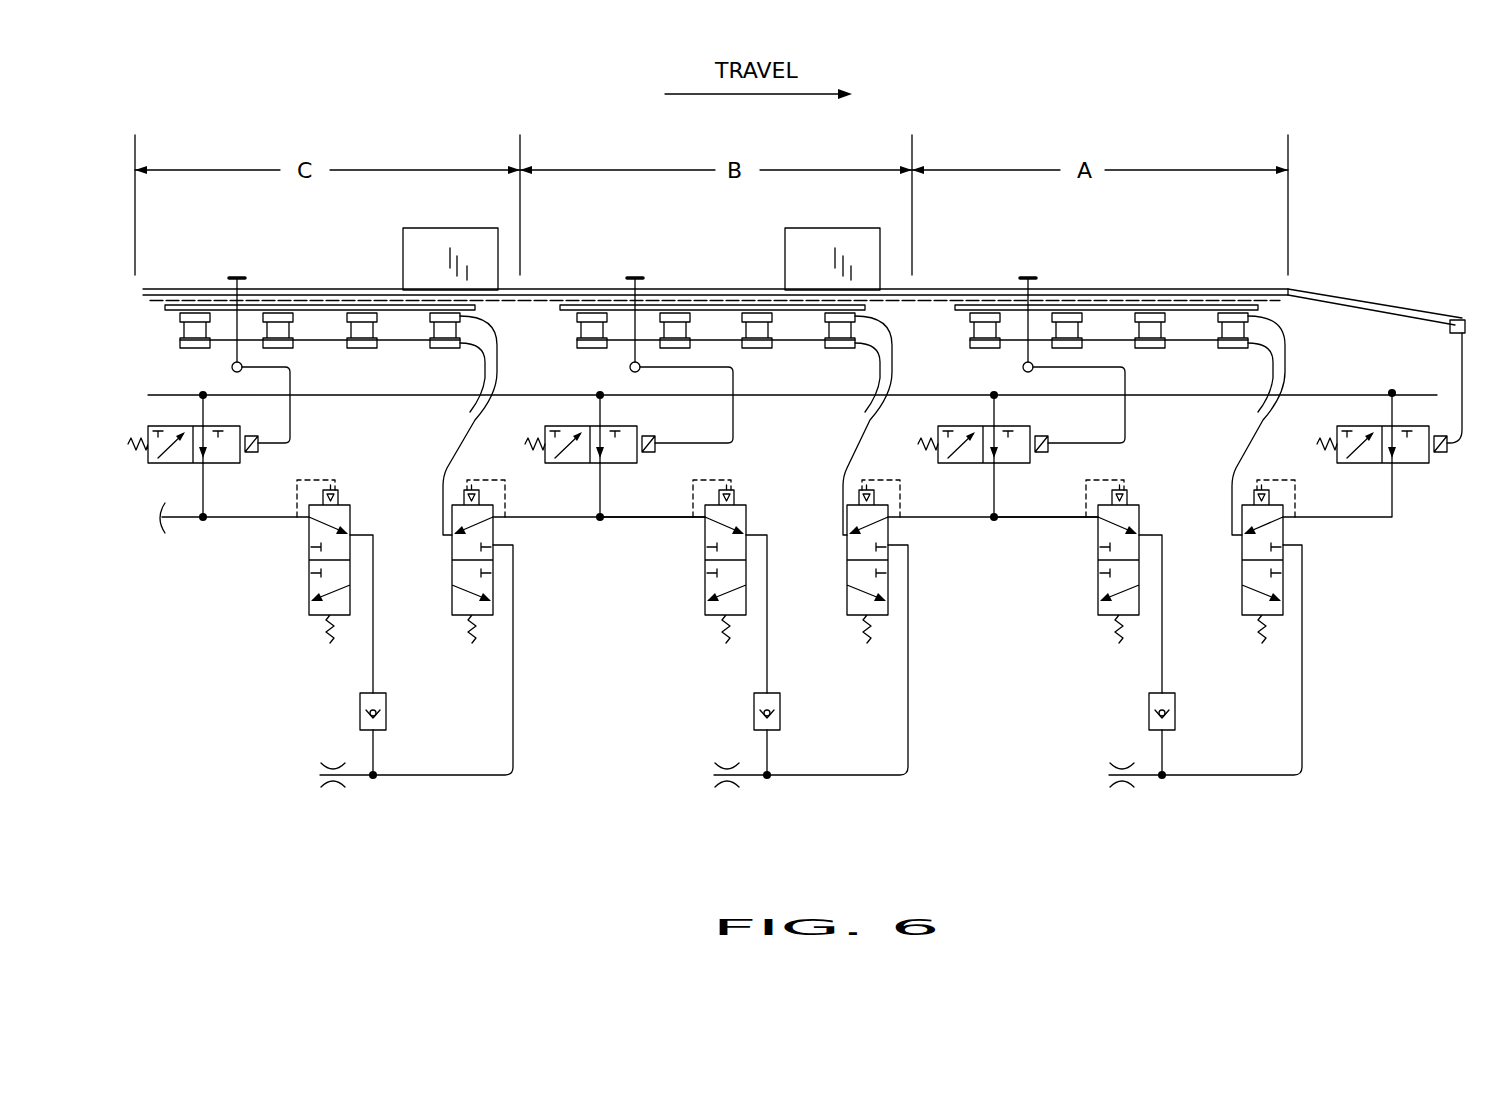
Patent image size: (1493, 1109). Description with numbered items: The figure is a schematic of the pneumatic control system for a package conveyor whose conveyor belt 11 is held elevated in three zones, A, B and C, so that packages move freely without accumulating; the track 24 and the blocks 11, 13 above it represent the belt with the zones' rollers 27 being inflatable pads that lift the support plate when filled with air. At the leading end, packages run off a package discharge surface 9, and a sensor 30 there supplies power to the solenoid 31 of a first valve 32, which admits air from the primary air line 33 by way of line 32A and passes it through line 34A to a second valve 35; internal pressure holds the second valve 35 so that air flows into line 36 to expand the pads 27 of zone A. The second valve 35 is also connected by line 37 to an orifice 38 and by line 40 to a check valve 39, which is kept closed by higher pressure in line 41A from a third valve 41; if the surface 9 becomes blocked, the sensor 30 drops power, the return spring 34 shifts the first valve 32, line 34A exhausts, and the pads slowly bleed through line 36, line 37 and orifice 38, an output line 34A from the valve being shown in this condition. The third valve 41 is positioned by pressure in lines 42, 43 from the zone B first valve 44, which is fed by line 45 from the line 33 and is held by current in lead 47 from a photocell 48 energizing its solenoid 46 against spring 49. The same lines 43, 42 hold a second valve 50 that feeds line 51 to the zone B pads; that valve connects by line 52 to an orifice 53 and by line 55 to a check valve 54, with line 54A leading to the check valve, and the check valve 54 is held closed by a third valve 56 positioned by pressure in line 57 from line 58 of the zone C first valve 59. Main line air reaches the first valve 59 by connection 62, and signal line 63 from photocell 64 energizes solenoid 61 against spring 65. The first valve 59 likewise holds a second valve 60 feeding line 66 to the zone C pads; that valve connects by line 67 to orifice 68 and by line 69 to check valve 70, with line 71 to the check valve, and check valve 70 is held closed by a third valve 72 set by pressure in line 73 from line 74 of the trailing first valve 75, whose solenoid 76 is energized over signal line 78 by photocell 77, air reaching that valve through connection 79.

The package discharge surface 9 is at (1375, 300).
The conveyor belt 11 is at (683, 290).
The cam block 13 is at (942, 290).
The track rail 24 is at (910, 300).
The pads 27 is at (1193, 397).
The sensor 30 is at (1425, 318).
The solenoid 31 is at (1442, 455).
The first valve 32 is at (1405, 470).
The supply line 32A is at (1395, 404).
The primary air line 33 is at (407, 397).
The return spring 34 is at (1312, 447).
The line 34A is at (1392, 522).
The second valve 35 is at (1285, 537).
The line 36 is at (1258, 422).
The line 37 is at (1250, 778).
The orifice 38 is at (1122, 800).
The check valve 39 is at (1175, 712).
The line 40 is at (1150, 718).
The third valve 41 is at (1133, 497).
The line 41A is at (1162, 633).
The line 42 is at (1077, 521).
The line 43 is at (996, 490).
The first valve 44 is at (978, 477).
The line 45 is at (962, 397).
The solenoid 46 is at (1048, 455).
The lead 47 is at (1103, 400).
The photocell 48 is at (1028, 278).
The return spring 49 is at (925, 447).
The second valve 50 is at (890, 537).
The line 51 is at (868, 412).
The line 52 is at (852, 778).
The orifice 53 is at (727, 800).
The check valve 54 is at (755, 712).
The output line 54A is at (767, 653).
The line 55 is at (770, 755).
The third valve 56 is at (740, 497).
The line 57 is at (623, 519).
The line 58 is at (602, 490).
The first valve 59 is at (580, 476).
The second valve 60 is at (495, 537).
The solenoid 61 is at (655, 452).
The connection 62 is at (542, 395).
The signal line 63 is at (678, 370).
The photocell 64 is at (635, 278).
The return spring 65 is at (530, 450).
The line 66 is at (497, 413).
The line 67 is at (460, 778).
The orifice 68 is at (333, 797).
The line 69 is at (373, 758).
The check valve 70 is at (360, 712).
The output line 71 is at (373, 628).
The third valve 72 is at (347, 507).
The line 73 is at (235, 519).
The line 74 is at (205, 490).
The first valve 75 is at (170, 483).
The solenoid 76 is at (258, 455).
The photocell 77 is at (237, 278).
The signal line 78 is at (290, 413).
The connection 79 is at (205, 405).